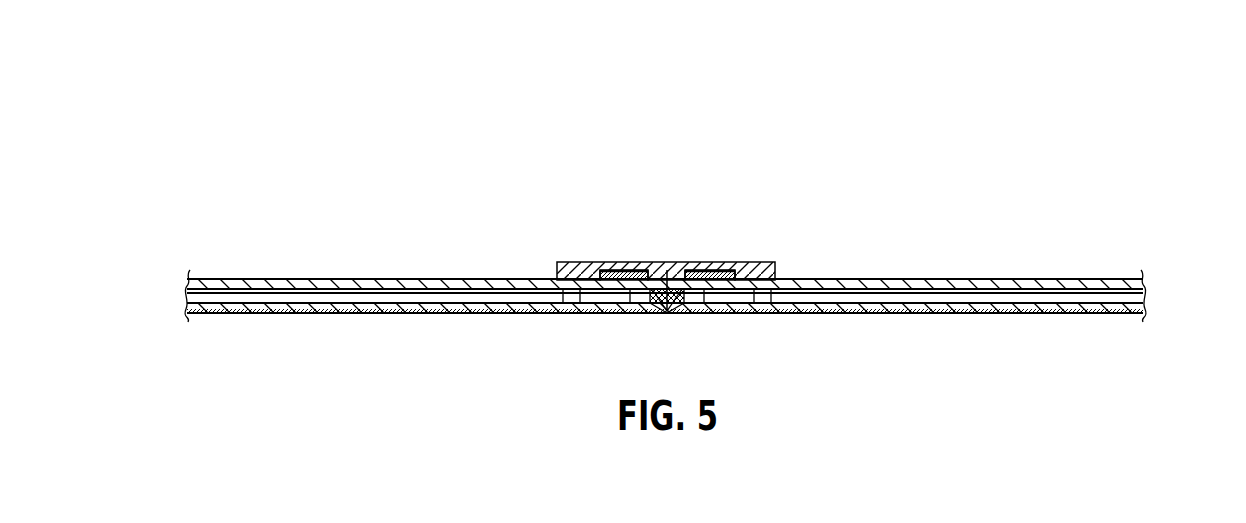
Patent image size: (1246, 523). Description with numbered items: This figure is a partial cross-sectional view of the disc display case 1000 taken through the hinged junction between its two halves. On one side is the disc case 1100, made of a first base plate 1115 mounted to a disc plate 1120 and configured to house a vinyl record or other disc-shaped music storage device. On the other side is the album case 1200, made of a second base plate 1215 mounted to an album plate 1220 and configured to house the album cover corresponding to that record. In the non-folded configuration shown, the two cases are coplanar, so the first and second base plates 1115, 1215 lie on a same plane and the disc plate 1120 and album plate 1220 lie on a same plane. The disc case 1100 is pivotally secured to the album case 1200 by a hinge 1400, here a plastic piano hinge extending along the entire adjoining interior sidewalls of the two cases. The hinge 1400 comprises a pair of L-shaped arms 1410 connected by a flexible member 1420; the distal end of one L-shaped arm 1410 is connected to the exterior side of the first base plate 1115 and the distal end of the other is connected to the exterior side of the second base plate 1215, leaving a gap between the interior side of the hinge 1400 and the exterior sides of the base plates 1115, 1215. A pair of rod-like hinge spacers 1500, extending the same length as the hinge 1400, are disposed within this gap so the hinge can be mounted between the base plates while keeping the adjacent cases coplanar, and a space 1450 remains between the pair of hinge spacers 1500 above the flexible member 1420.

The disc display case 1000 is at (813, 105).
The disc case 1100 is at (1107, 360).
The first base plate 1115 is at (1117, 278).
The disc plate 1120 is at (1047, 315).
The album case 1200 is at (232, 350).
The second base plate 1215 is at (228, 278).
The album plate 1220 is at (283, 316).
The hinge 1400 is at (557, 263).
The L-shaped arms 1410 is at (772, 265).
The flexible member 1420 is at (663, 263).
The space 1450 is at (677, 265).
The hinge spacers 1500 is at (617, 272).